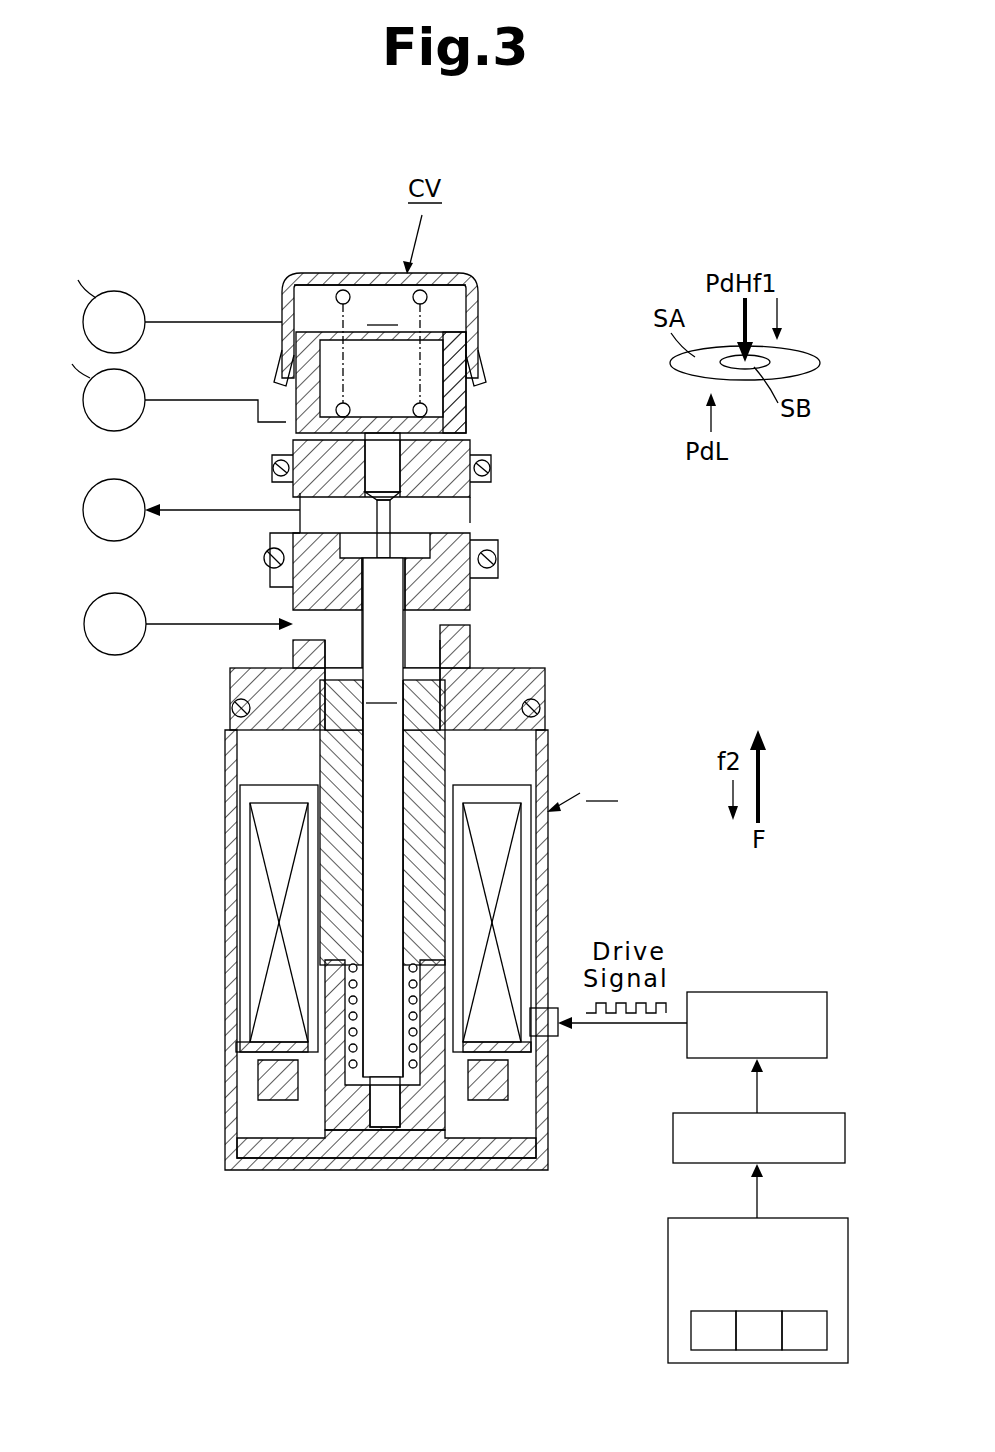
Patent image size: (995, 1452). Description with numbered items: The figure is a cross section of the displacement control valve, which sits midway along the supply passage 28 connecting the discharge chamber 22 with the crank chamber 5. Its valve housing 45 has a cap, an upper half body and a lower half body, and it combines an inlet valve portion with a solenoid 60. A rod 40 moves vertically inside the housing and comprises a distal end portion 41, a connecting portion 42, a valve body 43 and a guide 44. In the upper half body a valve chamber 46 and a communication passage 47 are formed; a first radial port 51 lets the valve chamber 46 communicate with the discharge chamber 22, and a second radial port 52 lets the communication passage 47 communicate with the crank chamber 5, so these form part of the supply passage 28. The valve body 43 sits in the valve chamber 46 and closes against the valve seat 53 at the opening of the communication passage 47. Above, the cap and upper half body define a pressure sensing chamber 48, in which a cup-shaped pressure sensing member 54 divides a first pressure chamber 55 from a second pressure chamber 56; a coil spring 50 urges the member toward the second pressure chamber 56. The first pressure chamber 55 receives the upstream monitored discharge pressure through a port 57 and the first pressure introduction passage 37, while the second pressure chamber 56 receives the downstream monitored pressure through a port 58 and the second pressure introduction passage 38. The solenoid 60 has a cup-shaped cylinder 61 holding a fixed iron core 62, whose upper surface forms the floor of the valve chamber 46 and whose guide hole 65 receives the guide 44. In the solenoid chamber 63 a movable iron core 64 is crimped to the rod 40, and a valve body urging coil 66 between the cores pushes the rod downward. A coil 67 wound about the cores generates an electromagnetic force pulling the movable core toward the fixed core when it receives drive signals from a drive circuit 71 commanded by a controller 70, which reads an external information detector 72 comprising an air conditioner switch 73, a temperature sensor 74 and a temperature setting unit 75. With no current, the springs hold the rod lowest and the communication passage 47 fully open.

The crank chamber 5 is at (98, 482).
The discharge chamber 22 is at (101, 594).
The supply passage 28 is at (186, 510).
The first pressure introduction passage 37 is at (172, 321).
The second pressure introduction passage 38 is at (170, 400).
The rod 40 is at (383, 842).
The distal end portion 41 is at (425, 470).
The connecting portion 42 is at (418, 498).
The valve body 43 is at (405, 572).
The guide 44 is at (367, 858).
The valve housing 45 is at (330, 278).
The valve chamber 46 is at (450, 634).
The communication passage 47 is at (400, 520).
The pressure sensing chamber 48 is at (444, 320).
The coil spring 50 is at (435, 285).
The first radial port 51 is at (290, 628).
The second radial port 52 is at (298, 506).
The valve seat 53 is at (273, 551).
The pressure sensing member 54 is at (455, 384).
The first pressure chamber 55 is at (381, 353).
The second pressure chamber 56 is at (274, 466).
The port 57 is at (282, 316).
The port 58 is at (290, 409).
The solenoid 60 is at (421, 950).
The cup-shaped cylinder 61 is at (255, 832).
The fixed iron core 62 is at (334, 771).
The solenoid chamber 63 is at (327, 963).
The movable iron core 64 is at (342, 1106).
The guide hole 65 is at (332, 896).
The valve body urging coil 66 is at (350, 1014).
The coil 67 is at (513, 907).
The controller 70 is at (666, 1139).
The drive circuit 71 is at (791, 992).
The external information detector 72 is at (664, 1306).
The A/C switch 73 is at (713, 1330).
The temperature sensor 74 is at (759, 1330).
The temperature setting unit 75 is at (804, 1330).